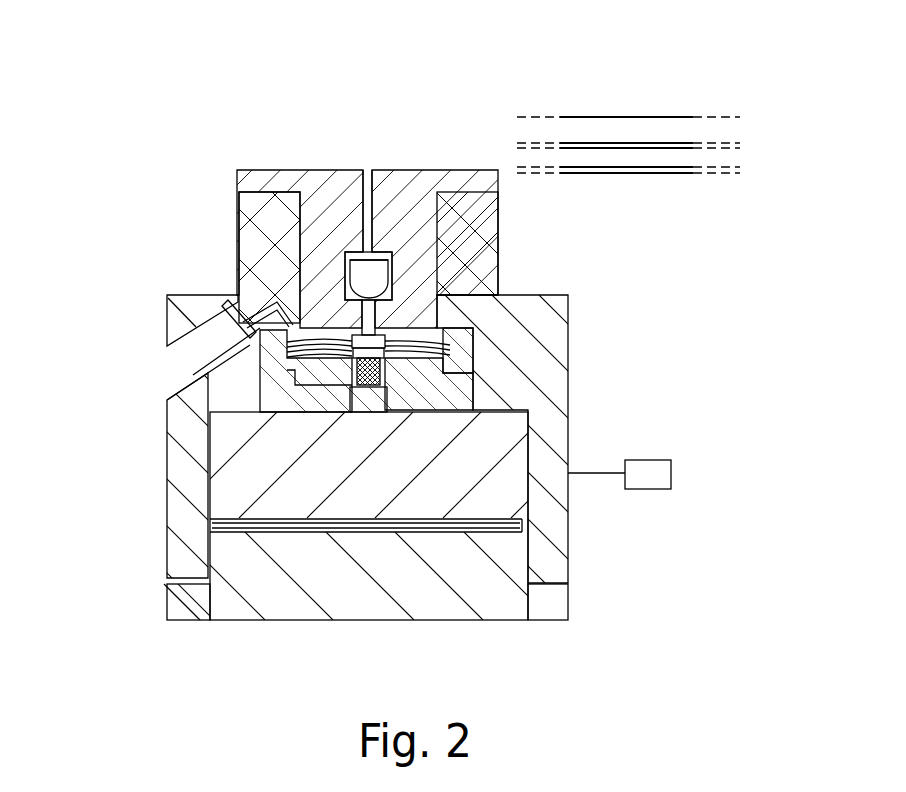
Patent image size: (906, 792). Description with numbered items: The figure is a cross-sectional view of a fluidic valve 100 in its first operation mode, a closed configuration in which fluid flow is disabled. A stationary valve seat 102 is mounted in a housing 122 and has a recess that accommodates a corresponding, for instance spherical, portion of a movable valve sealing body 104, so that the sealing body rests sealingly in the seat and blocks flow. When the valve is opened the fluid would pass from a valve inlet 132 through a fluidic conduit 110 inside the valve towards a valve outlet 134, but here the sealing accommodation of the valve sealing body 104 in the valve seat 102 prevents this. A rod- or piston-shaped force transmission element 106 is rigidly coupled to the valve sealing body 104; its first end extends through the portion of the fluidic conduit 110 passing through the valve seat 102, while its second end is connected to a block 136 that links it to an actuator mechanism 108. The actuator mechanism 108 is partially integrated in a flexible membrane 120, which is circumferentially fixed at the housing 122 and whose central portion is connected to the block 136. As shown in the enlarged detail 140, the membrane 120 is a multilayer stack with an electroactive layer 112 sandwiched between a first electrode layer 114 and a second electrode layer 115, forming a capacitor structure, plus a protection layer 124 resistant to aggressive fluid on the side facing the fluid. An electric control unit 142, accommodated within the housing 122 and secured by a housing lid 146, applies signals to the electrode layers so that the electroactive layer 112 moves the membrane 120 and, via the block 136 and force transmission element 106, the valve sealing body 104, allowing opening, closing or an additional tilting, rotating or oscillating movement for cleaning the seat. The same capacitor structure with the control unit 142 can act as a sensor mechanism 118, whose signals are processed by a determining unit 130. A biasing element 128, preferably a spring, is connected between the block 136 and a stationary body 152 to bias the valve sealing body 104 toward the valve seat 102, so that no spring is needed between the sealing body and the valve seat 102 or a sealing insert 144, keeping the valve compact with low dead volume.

The fluidic valve 100 is at (130, 126).
The valve seat 102 is at (313, 307).
The valve sealing body 104 is at (382, 278).
The force transmission element 106 is at (345, 320).
The actuator mechanism 108 is at (257, 443).
The fluidic conduit 110 is at (347, 330).
The electroactive layer 112 is at (567, 366).
The first electrode layer 114 is at (600, 174).
The second electrode layer 115 is at (620, 146).
The sensor mechanism 118 is at (227, 498).
The membrane 120 is at (445, 341).
The housing 122 is at (190, 305).
The protection layer 124 is at (676, 125).
The biasing element 128 is at (353, 376).
The determining unit 130 is at (619, 474).
The valve inlet 132 is at (190, 352).
The valve outlet 134 is at (367, 170).
The block 136 is at (385, 340).
The detail 140 is at (514, 124).
The electric control unit 142 is at (513, 503).
The sealing insert 144 is at (418, 178).
The housing lid 146 is at (195, 597).
The stationary body 152 is at (370, 400).